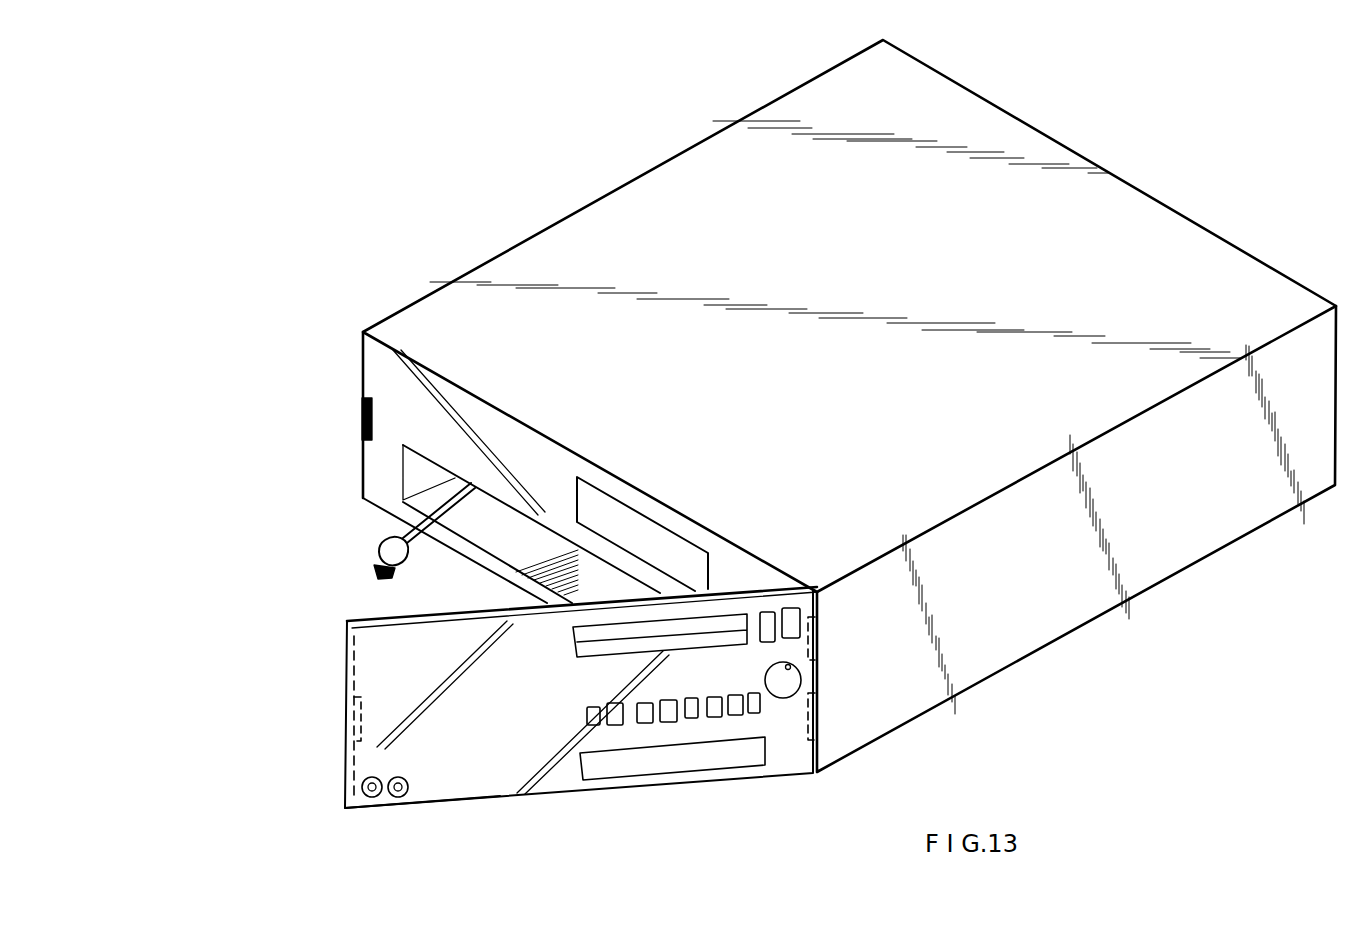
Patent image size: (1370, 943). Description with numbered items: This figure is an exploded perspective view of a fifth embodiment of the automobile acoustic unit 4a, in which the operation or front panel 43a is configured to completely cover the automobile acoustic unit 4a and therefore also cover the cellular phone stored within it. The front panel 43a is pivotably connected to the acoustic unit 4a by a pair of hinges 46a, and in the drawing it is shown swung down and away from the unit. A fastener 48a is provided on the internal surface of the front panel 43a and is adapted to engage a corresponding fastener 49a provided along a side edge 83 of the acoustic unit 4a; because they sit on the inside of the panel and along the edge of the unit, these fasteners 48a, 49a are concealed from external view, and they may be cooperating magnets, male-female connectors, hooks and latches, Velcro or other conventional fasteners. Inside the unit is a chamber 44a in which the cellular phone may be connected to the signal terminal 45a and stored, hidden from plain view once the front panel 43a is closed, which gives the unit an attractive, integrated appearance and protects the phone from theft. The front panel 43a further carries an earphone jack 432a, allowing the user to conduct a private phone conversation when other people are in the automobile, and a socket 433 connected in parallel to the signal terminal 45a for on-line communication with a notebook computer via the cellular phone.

The automobile acoustic unit 4a is at (605, 138).
The fastener 49a is at (364, 401).
The side edge 83 is at (364, 465).
The signal terminal 45a is at (376, 528).
The front panel 43a is at (376, 642).
The chamber 44a is at (548, 520).
The hinges 46a is at (818, 712).
The fastener 48a is at (347, 724).
The earphone jack 432a is at (377, 803).
The socket 433 is at (417, 790).